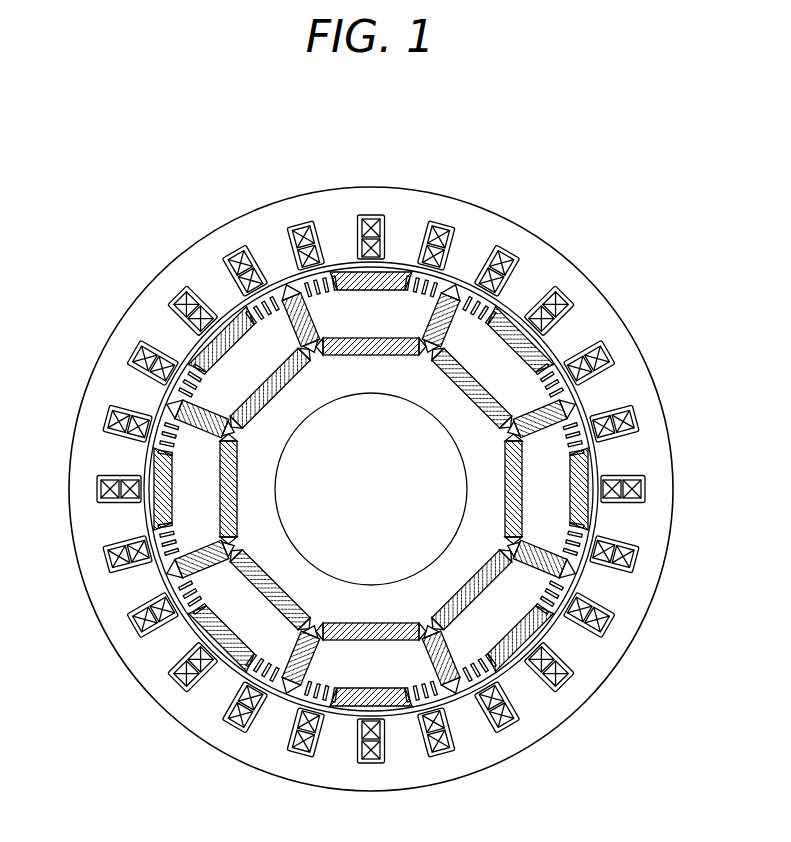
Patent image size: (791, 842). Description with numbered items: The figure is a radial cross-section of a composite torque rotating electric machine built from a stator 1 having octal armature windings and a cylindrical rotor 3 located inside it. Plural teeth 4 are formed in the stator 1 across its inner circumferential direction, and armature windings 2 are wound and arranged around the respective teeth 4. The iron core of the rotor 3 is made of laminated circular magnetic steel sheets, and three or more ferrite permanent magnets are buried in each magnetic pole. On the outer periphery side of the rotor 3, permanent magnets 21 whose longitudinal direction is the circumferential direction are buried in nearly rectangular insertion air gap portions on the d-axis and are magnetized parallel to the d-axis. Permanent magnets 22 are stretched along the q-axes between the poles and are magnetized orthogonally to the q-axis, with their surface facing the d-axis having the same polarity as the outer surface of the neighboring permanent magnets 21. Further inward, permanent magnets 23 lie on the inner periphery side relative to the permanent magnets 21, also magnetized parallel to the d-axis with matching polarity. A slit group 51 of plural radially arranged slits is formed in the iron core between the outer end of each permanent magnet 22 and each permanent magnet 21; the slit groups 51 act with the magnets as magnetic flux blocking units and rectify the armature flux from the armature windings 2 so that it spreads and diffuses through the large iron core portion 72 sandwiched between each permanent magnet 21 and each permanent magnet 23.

The stator 1 is at (130, 324).
The armature windings 2 is at (240, 257).
The permanent magnets 22 is at (267, 283).
The teeth 4 is at (392, 240).
The iron core portion 72 is at (388, 320).
The permanent magnets 21 is at (345, 272).
The permanent magnets 23 is at (338, 358).
The slit group 51 is at (310, 276).
The rotor 3 is at (273, 536).